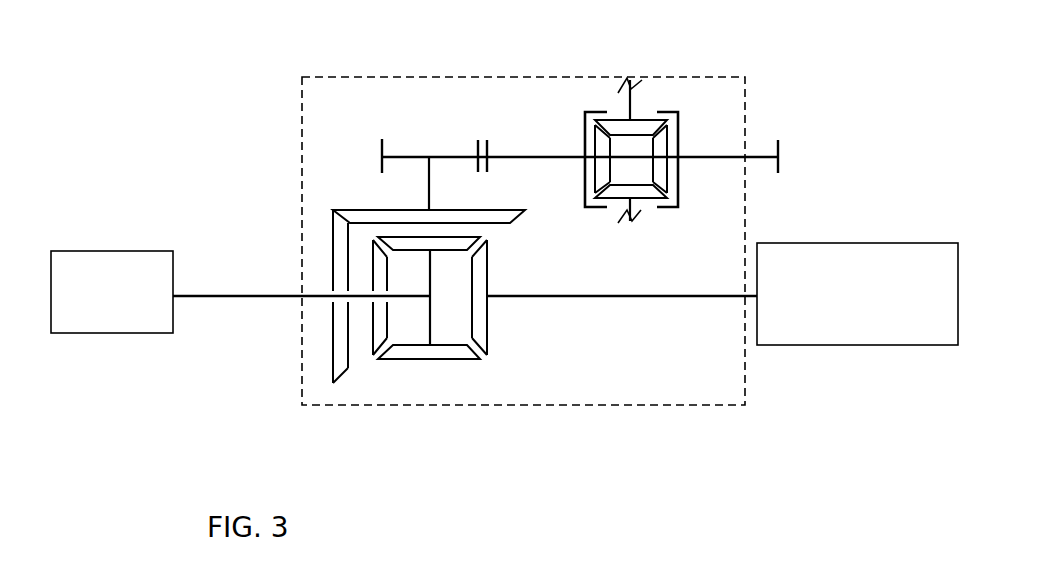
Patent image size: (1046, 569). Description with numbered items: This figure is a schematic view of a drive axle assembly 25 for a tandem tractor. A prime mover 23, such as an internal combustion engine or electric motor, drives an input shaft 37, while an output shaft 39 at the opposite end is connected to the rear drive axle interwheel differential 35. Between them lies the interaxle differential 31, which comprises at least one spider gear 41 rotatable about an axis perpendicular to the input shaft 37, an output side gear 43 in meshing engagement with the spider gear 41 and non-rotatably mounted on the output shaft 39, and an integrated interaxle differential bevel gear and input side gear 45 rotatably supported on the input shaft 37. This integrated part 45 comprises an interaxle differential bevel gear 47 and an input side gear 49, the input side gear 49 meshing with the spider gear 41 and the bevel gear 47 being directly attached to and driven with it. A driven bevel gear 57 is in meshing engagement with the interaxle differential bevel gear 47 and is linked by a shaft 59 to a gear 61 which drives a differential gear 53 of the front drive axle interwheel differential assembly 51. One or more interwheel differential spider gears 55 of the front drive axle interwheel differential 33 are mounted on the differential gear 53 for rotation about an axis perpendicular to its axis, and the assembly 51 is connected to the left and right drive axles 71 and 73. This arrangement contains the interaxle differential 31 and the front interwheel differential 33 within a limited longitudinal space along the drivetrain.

The prime mover 23 is at (95, 251).
The drive axle assembly 25 is at (689, 412).
The interaxle differential 31 is at (460, 361).
The front drive axle interwheel differential 33 is at (675, 153).
The rear drive axle interwheel differential 35 is at (875, 243).
The input shaft 37 is at (242, 296).
The output shaft 39 is at (705, 297).
The spider gear 41 is at (455, 243).
The output side gear 43 is at (488, 325).
The integrated interaxle differential bevel gear and input side gear 45 is at (331, 357).
The interaxle differential bevel gear 47 is at (333, 383).
The input side gear 49 is at (377, 350).
The front drive axle interwheel differential assembly 51 is at (676, 94).
The differential gear 53 is at (547, 157).
The interwheel differential spider gear 55 is at (602, 165).
The driven bevel gear 57 is at (365, 215).
The shaft 59 is at (428, 188).
The gear 61 is at (443, 157).
The left drive axle 71 is at (641, 211).
The right drive axle 73 is at (623, 103).